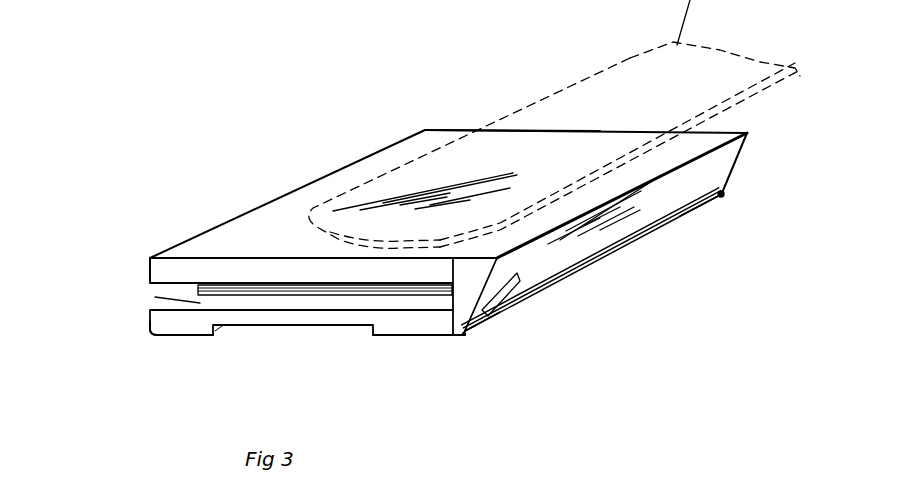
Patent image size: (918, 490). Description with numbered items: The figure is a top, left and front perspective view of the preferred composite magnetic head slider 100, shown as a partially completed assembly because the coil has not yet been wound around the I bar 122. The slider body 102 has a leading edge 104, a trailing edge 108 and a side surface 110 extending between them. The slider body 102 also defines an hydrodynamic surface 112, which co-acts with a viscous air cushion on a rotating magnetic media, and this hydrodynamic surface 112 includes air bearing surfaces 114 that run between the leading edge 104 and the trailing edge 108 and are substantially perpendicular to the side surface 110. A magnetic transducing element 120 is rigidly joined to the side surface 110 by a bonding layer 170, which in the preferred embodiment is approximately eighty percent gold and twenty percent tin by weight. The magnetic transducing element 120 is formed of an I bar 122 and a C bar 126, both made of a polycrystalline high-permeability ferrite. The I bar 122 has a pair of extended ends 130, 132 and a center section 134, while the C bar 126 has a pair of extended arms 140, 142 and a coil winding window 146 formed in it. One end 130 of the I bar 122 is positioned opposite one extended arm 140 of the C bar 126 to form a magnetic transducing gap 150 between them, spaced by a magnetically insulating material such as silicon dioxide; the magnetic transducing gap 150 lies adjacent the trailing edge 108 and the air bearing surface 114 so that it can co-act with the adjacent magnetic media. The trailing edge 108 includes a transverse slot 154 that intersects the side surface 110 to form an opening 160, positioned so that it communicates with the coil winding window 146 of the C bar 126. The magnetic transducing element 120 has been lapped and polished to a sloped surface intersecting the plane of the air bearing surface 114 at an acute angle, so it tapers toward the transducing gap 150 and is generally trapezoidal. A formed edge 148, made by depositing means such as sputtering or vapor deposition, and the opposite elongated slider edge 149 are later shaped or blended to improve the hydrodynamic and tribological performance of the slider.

The magnetic head slider 100 is at (484, 122).
The slider body 102 is at (360, 152).
The leading edge 104 is at (597, 132).
The trailing edge 108 is at (148, 271).
The side surface 110 is at (663, 153).
The hydrodynamic surface 112 is at (273, 326).
The air bearing surfaces 114 is at (180, 335).
The magnetic transducing element 120 is at (740, 168).
The I bar 122 is at (479, 318).
The C bar 126 is at (677, 209).
The extended end of I bar 130 is at (465, 335).
The extended end of I bar 132 is at (492, 258).
The center section 134 is at (471, 280).
The extended arm of C bar 140 is at (488, 320).
The extended arm of C bar 142 is at (513, 260).
The coil winding window 146 is at (500, 288).
The formed edge 148 is at (464, 335).
The elongated slider edge 149 is at (150, 328).
The magnetic transducing gap 150 is at (477, 326).
The transverse slot 154 is at (192, 300).
The opening 160 is at (453, 285).
The bonding layer 170 is at (650, 168).